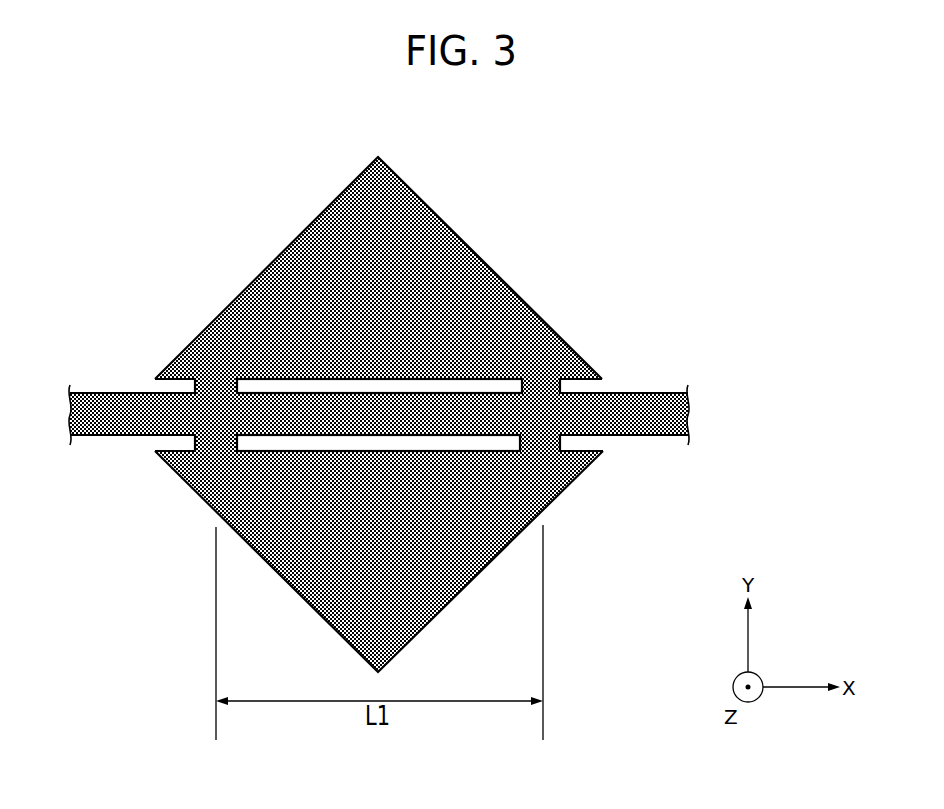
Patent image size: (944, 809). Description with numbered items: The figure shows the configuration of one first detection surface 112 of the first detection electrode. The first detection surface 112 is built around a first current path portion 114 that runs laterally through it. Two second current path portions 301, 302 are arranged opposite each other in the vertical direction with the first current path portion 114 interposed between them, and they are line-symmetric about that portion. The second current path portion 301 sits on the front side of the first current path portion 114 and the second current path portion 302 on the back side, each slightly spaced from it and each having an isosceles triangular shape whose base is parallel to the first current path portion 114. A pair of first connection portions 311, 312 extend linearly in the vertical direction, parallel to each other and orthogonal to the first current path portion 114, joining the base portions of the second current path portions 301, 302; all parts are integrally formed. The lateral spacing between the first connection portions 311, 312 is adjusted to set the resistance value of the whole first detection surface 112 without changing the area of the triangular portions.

The first detection surface 112 is at (510, 225).
The second current path portion 301 is at (508, 287).
The second current path portion 302 is at (575, 479).
The first connection portion 311 is at (160, 383).
The first connection portion 312 is at (566, 386).
The first current path portion 114 is at (674, 393).